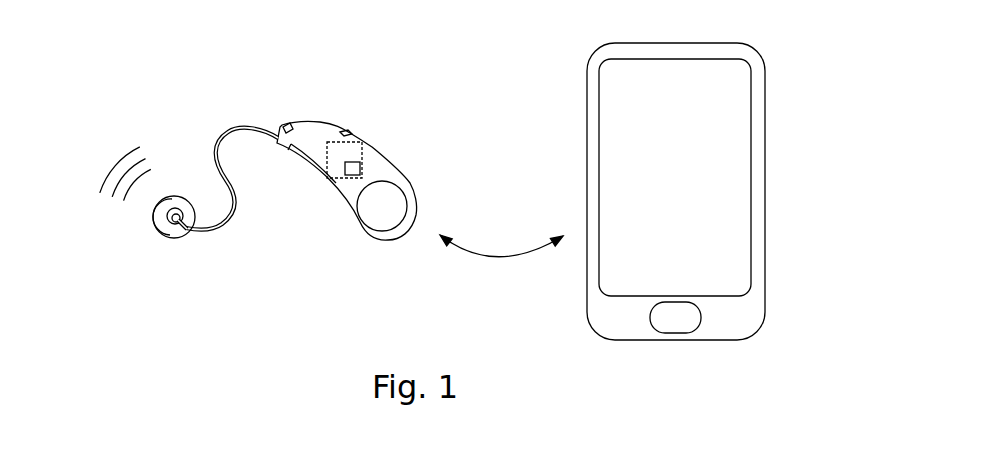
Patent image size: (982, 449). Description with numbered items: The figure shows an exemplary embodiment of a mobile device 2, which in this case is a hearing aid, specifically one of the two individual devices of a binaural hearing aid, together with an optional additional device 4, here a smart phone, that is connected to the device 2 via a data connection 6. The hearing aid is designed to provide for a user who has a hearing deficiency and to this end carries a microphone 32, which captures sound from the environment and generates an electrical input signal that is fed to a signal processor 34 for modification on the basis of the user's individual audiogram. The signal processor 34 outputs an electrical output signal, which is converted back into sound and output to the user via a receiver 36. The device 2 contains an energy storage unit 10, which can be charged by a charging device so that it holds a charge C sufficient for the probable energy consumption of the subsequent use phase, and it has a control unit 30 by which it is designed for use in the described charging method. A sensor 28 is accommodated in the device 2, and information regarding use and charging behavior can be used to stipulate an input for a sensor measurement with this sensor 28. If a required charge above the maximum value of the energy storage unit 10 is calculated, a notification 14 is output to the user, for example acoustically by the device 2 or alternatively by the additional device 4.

The mobile device 2 is at (243, 115).
The additional device 4 is at (550, 102).
The data connection 6 is at (487, 257).
The energy storage unit 10 is at (377, 208).
The notification 14 is at (98, 192).
The sensor 28 is at (296, 161).
The control unit 30 is at (362, 143).
The microphone 32 is at (288, 125).
The signal processor 34 is at (361, 170).
The receiver 36 is at (158, 232).
The charge C is at (370, 232).